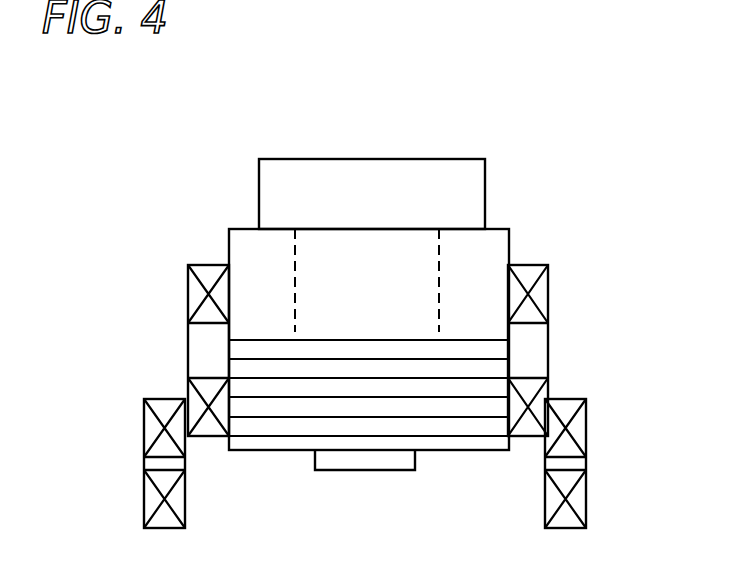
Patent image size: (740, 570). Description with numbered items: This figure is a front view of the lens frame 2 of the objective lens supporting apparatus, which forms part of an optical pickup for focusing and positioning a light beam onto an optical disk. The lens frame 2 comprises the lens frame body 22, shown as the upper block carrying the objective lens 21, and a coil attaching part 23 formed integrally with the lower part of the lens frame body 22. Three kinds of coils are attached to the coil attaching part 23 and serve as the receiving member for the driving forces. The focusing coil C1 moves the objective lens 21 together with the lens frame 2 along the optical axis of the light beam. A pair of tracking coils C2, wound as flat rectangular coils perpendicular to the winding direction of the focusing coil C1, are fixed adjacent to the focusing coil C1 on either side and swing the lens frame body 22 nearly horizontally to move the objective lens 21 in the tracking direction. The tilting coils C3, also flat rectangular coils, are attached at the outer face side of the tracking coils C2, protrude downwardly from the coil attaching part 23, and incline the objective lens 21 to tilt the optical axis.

The lens frame 2 is at (517, 150).
The objective lens 21 is at (297, 173).
The lens frame body 22 is at (488, 243).
The coil attaching part 23 is at (448, 452).
The focusing coil C1 is at (253, 437).
The tracking coil C2 is at (188, 299).
The tilting coil C3 is at (144, 501).